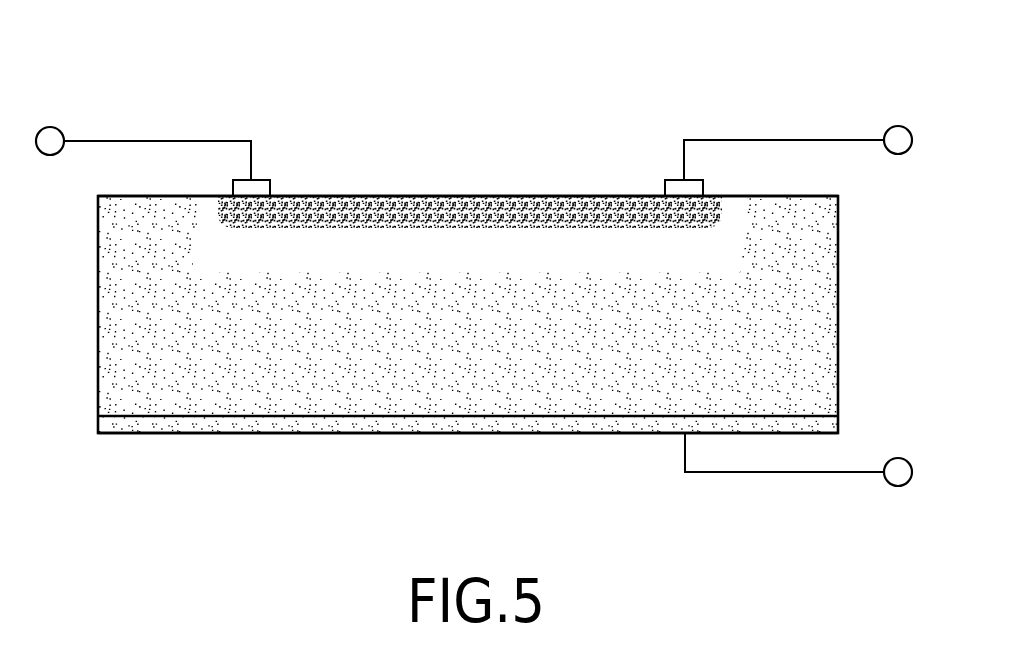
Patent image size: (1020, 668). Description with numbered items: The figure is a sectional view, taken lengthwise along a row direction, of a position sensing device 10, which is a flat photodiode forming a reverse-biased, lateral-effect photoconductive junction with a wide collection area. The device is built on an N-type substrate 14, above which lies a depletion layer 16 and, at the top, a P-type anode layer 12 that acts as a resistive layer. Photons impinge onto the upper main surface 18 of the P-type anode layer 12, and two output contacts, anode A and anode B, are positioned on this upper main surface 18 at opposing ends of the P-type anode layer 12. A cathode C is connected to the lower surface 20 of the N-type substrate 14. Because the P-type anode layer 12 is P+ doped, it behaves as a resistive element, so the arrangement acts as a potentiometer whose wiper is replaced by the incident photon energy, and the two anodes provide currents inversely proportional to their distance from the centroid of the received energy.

The position sensing device 10 is at (479, 274).
The P-type anode layer 12 is at (492, 196).
The N-type substrate 14 is at (493, 400).
The depletion layer 16 is at (735, 239).
The upper main surface 18 is at (363, 196).
The lower surface 20 is at (613, 433).